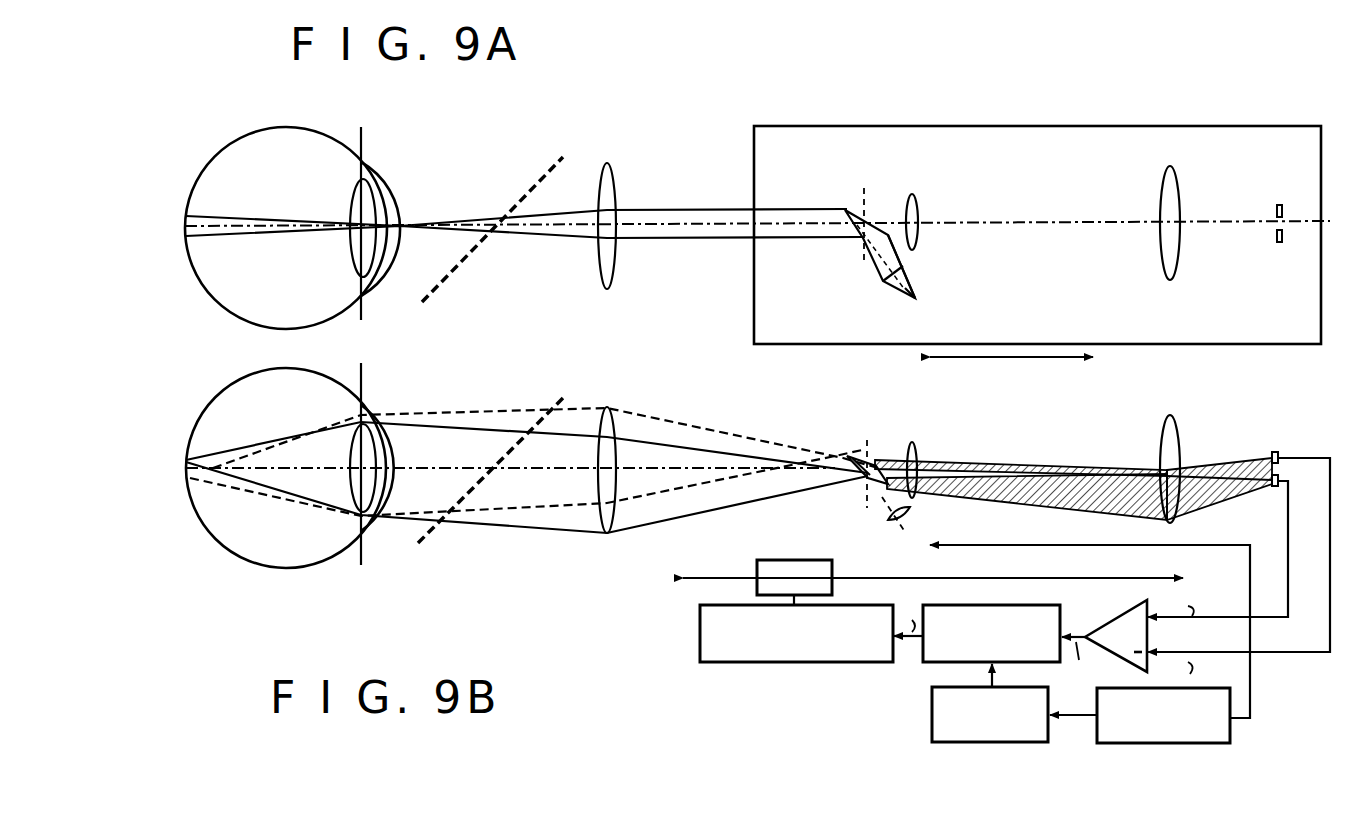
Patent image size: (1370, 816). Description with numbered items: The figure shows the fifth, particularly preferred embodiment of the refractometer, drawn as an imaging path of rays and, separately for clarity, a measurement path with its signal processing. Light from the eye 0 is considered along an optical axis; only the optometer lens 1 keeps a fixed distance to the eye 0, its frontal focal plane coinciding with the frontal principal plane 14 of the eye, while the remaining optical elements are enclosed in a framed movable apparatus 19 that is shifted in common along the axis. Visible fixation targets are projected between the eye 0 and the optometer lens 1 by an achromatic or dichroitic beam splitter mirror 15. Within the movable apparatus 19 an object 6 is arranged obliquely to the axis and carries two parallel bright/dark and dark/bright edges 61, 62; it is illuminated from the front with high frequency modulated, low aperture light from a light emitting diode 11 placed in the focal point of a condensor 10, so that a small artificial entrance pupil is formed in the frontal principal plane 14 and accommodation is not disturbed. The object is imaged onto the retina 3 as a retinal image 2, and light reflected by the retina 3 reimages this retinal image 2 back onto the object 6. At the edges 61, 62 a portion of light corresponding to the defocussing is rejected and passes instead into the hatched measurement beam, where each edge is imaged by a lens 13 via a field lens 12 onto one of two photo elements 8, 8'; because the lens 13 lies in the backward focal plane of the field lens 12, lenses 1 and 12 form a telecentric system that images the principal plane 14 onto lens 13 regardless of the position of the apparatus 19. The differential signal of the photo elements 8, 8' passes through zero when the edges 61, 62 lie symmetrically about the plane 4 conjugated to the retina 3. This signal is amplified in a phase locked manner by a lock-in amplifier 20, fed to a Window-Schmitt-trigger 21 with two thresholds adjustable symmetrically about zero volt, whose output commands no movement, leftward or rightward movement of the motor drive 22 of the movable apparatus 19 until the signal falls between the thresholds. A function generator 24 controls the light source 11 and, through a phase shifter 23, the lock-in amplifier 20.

In FIG. 9A, the eye 0 is at (292, 218).
In FIG. 9B, the eye 0 is at (290, 458).
In FIG. 9A, the retinal image 2 is at (512, 229).
In FIG. 9B, the retinal image 2 is at (520, 470).
In FIG. 9A, the retina 3 is at (183, 174).
In FIG. 9B, the retina 3 is at (183, 421).
In FIG. 9A, the frontal principal plane of the eye 14 is at (387, 223).
In FIG. 9B, the frontal principal plane of the eye 14 is at (389, 464).
In FIG. 9A, the beam splitter mirror 15 is at (492, 249).
In FIG. 9B, the beam splitter mirror 15 is at (490, 519).
In FIG. 9A, the optometer lens 1 is at (607, 215).
In FIG. 9B, the optometer lens 1 is at (607, 459).
In FIG. 9A, the movable apparatus 19 is at (1037, 261).
In FIG. 9A, the bright/dark edge 61 is at (865, 223).
In FIG. 9A, the dark/bright edge 62 is at (883, 233).
In FIG. 9B, the object 6 is at (863, 459).
In FIG. 9A, the conjugated plane 4 is at (848, 241).
In FIG. 9A, the condensor 10 is at (917, 280).
In FIG. 9B, the condensor 10 is at (872, 522).
In FIG. 9A, the light emitting diode 11 is at (932, 313).
In FIG. 9B, the light emitting diode 11 is at (1068, 631).
In FIG. 9A, the field lens 12 is at (933, 209).
In FIG. 9B, the field lens 12 is at (1073, 462).
In FIG. 9A, the lens 13 is at (1181, 209).
In FIG. 9B, the lens 13 is at (1139, 467).
In FIG. 9A, the photo element 8' is at (1273, 196).
In FIG. 9B, the photo element 8' is at (1239, 540).
In FIG. 9A, the photo element 8 is at (1273, 253).
In FIG. 9B, the photo element 8 is at (1218, 546).
In FIG. 9B, the motor drive 22 is at (933, 572).
In FIG. 9B, the Window-Schmitt-trigger 21 is at (788, 660).
In FIG. 9B, the lock-in amplifier 20 is at (1029, 649).
In FIG. 9B, the phase shifter 23 is at (961, 719).
In FIG. 9B, the function generator 24 is at (1140, 731).